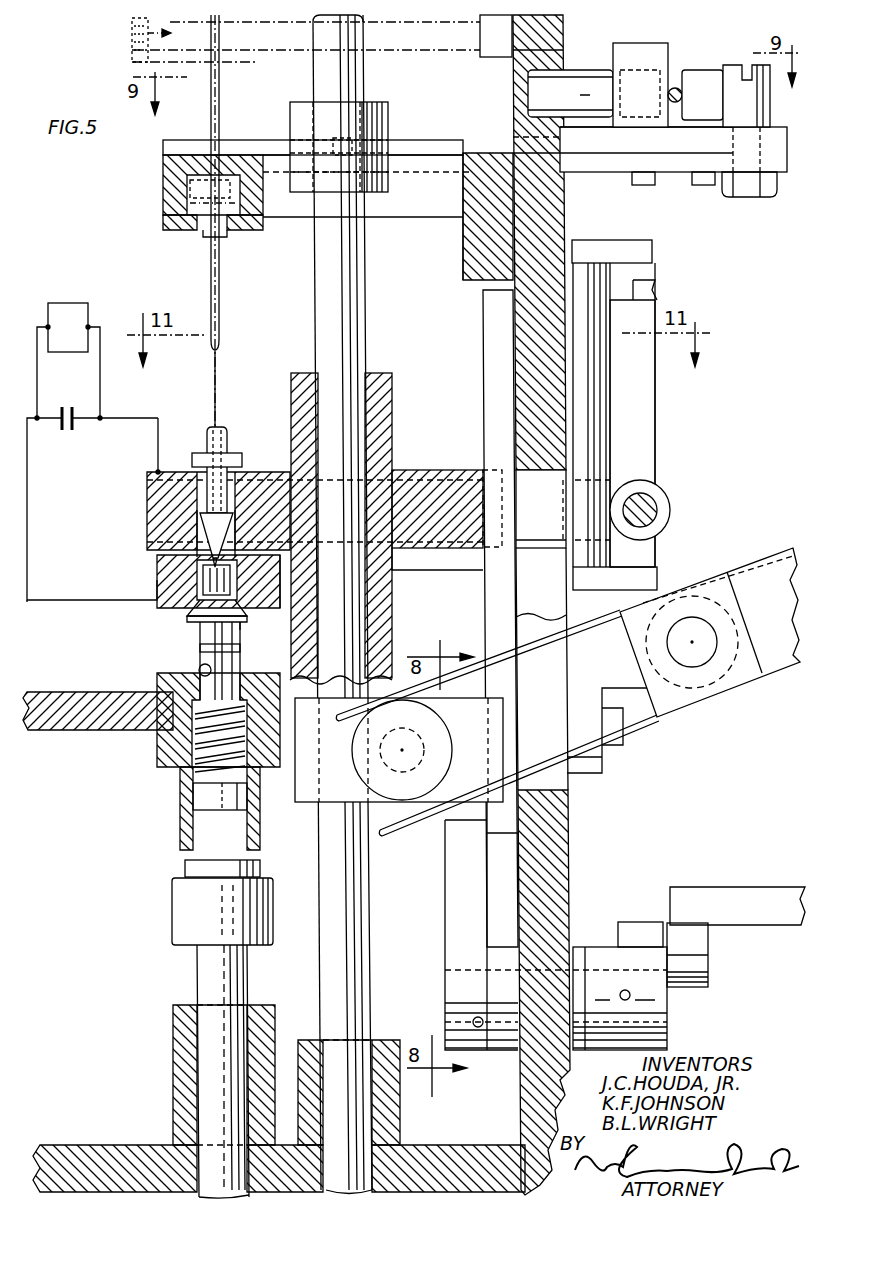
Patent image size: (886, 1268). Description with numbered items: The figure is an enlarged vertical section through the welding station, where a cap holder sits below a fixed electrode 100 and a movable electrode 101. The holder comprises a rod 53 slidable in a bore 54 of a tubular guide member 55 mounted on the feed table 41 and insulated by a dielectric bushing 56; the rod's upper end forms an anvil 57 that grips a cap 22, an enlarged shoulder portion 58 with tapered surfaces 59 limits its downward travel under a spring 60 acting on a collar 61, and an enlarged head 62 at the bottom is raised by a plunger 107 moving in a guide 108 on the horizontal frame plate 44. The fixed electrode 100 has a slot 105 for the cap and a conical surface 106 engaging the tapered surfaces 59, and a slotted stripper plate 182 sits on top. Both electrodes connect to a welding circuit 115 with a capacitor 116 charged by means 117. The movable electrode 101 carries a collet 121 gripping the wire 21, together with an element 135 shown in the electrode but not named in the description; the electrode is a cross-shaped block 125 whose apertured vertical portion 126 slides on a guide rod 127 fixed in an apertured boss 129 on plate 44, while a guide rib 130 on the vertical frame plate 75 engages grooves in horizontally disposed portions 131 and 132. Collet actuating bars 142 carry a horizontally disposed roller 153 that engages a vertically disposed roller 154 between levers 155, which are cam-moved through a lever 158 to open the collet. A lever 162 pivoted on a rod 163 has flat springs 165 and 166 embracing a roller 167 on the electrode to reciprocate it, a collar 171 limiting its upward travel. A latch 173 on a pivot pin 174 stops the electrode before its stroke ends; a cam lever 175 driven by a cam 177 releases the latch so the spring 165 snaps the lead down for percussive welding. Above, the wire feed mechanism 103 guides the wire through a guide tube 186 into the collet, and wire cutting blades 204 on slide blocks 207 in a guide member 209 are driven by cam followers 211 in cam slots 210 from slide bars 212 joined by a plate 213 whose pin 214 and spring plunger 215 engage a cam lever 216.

The wire 21 is at (219, 116).
The cap 22 is at (192, 566).
The feed table 41 is at (50, 705).
The horizontal frame plate 44 is at (88, 1148).
The rod 53 is at (222, 652).
The bore 54 is at (205, 672).
The tubular guide member 55 is at (182, 780).
The dielectric bushing 56 is at (157, 746).
The anvil 57 is at (185, 608).
The enlarged shoulder portion 58 is at (243, 620).
The tapered surfaces 59 is at (202, 648).
The spring 60 is at (195, 765).
The collar 61 is at (205, 795).
The enlarged head 62 is at (187, 869).
The vertical frame plate 75 is at (570, 850).
The fixed electrode 100 is at (157, 590).
The movable electrode 101 is at (138, 501).
The wire feed mechanism 103 is at (130, 36).
The slot 105 is at (203, 580).
The conical surface 106 is at (200, 630).
The plunger 107 is at (188, 906).
The guide 108 is at (185, 1046).
The welding circuit 115 is at (37, 604).
The capacitor 116 is at (82, 432).
The charging means 117 is at (65, 312).
The collet 121 is at (197, 530).
The cross-shaped block 125 is at (398, 466).
The apertured vertical portion 126 is at (388, 594).
The guide rod 127 is at (352, 296).
The apertured boss 129 is at (395, 1120).
The guide rib 130 is at (487, 342).
The horizontally disposed portion 131 is at (423, 482).
The horizontally disposed portion 132 is at (462, 705).
The wire guide sleeve 135 is at (232, 458).
The collet actuating bars 142 is at (542, 548).
The horizontally disposed roller 153 is at (672, 503).
The vertically disposed roller 154 is at (596, 428).
The levers 155 is at (628, 248).
The lever 158 is at (657, 298).
The lever 162 is at (752, 556).
The rod 163 is at (694, 667).
The flat spring 165 is at (478, 660).
The flat spring 166 is at (570, 785).
The roller 167 is at (408, 785).
The collar 171 is at (385, 119).
The latch 173 is at (462, 884).
The pivot pin 174 is at (540, 1025).
The cam lever 175 is at (610, 952).
The cam 177 is at (735, 903).
The stripper plate 182 is at (163, 568).
The guide tube 186 is at (222, 90).
The wire cutting blades 204 is at (205, 234).
The slide blocks 207 is at (170, 212).
The guide member 209 is at (165, 166).
The cam slots 210 is at (186, 208).
The cam followers 211 is at (170, 186).
The slide bars 212 is at (598, 172).
The plate 213 is at (680, 150).
The pin 214 is at (738, 62).
The spring plunger 215 is at (676, 88).
The cam lever 216 is at (700, 78).